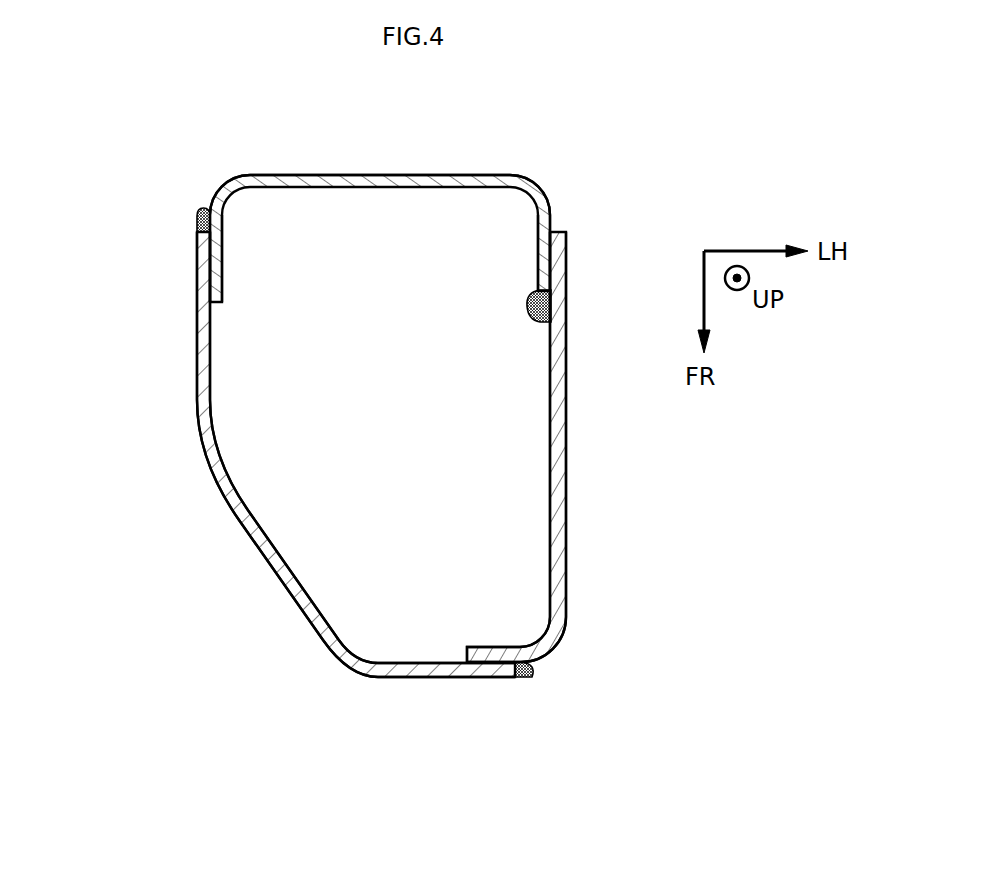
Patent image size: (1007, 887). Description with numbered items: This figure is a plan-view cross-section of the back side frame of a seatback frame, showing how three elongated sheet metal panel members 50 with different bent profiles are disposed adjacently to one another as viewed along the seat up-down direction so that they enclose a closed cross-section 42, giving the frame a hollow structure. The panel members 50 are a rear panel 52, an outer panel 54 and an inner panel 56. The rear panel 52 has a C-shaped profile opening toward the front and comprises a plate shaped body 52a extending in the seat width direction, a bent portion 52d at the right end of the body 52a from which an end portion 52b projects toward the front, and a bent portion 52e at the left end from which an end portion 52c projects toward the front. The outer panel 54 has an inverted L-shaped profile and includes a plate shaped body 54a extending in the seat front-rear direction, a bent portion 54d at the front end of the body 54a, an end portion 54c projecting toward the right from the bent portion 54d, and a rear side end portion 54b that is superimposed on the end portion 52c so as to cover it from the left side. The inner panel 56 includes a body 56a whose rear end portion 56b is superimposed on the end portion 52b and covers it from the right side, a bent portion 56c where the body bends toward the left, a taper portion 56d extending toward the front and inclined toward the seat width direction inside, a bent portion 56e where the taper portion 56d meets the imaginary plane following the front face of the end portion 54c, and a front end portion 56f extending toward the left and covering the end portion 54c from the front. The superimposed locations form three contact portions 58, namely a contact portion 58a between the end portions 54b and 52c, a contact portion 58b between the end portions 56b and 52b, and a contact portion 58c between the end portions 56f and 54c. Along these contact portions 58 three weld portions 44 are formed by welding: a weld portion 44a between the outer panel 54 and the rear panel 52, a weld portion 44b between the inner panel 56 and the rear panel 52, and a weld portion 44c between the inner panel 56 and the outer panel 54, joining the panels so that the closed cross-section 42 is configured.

The closed cross-section 42 is at (535, 433).
The weld portions 44 is at (353, 448).
The weld portion 44a is at (528, 305).
The weld portion 44b is at (204, 212).
The weld portion 44c is at (532, 677).
The panel members 50 is at (394, 415).
The rear panel 52 is at (252, 176).
The body 52a is at (357, 177).
The end portion 52b is at (222, 247).
The end portion 52c is at (538, 253).
The bent portion 52d is at (223, 178).
The bent portion 52e is at (533, 177).
The outer panel 54 is at (567, 597).
The body 54a is at (566, 481).
The rear side end portion 54b is at (562, 275).
The end portion 54c is at (507, 651).
The bent portion 54d is at (552, 648).
The inner panel 56 is at (282, 590).
The body 56a is at (198, 348).
The end portion 56b is at (198, 262).
The bent portion 56c is at (200, 433).
The taper portion 56d is at (242, 522).
The bent portion 56e is at (327, 665).
The end portion 56f is at (444, 678).
The contact portions 58 is at (368, 483).
The contact portion 58a is at (557, 236).
The contact portion 58b is at (198, 245).
The contact portion 58c is at (493, 665).